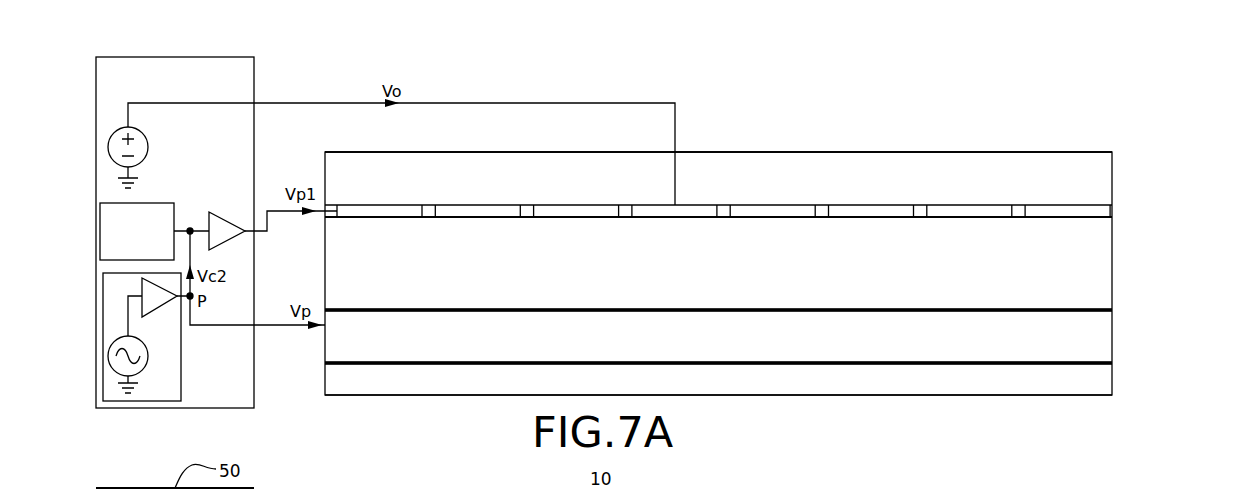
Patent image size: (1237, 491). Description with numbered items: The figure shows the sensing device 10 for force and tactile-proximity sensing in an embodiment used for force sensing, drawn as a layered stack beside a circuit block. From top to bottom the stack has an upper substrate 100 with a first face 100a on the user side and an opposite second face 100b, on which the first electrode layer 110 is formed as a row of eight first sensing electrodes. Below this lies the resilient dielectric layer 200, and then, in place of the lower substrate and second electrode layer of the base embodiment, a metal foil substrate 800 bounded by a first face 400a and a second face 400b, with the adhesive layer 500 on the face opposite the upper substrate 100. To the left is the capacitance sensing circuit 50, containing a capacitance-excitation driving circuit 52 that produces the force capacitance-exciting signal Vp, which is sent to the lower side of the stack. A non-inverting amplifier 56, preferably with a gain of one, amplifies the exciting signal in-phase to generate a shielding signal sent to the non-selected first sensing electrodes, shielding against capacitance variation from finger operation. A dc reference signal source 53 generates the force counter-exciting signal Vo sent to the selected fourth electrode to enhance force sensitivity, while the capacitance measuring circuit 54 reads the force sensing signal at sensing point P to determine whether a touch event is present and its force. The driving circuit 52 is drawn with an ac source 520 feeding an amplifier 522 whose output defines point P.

The sensing device 10 is at (612, 48).
The capacitance sensing circuit 50 is at (175, 57).
The capacitance-excitation driving circuit 52 is at (103, 324).
The AC signal source 520 is at (108, 356).
The amplifier 522 is at (142, 281).
The dc reference signal source 53 is at (108, 147).
The capacitance measuring circuit 54 is at (100, 229).
The non-inverting amplifier 56 is at (231, 213).
The upper substrate 100 is at (877, 163).
The first face 100a is at (1008, 152).
The second face 100b is at (1021, 217).
The first electrode layer 110 is at (1107, 211).
The resilient dielectric layer 200 is at (1102, 263).
The first face 400a is at (1087, 309).
The metal foil substrate 800 is at (1102, 338).
The second face 400b is at (1087, 363).
The adhesive layer 500 is at (1102, 378).